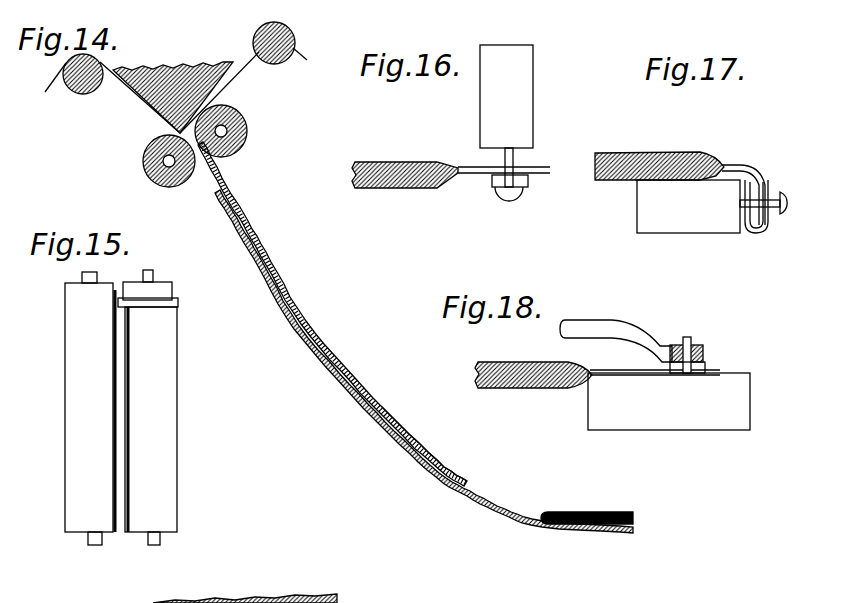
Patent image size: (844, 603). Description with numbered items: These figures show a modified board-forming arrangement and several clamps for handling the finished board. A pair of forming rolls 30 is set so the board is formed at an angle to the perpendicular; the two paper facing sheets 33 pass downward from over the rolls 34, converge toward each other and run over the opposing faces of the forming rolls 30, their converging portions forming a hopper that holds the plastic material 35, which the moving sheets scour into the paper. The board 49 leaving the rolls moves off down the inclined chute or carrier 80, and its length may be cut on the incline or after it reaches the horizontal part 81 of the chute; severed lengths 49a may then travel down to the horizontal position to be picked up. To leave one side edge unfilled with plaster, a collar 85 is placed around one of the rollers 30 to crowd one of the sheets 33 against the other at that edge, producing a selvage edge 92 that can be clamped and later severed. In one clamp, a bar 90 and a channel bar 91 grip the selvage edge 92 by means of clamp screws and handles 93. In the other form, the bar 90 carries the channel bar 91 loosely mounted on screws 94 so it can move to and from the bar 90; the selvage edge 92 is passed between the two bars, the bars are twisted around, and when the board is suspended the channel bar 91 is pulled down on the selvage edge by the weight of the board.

In FIG. 14, the forming rolls 30 is at (248, 143).
In FIG. 15, the forming rolls 30 is at (121, 407).
In FIG. 14, the paper facing sheets 33 is at (143, 103).
In FIG. 15, the paper facing sheets 33 is at (113, 468).
In FIG. 14, the rolls 34 is at (73, 94).
In FIG. 14, the plastic material 35 is at (178, 70).
In FIG. 15, the plastic material 35 is at (253, 598).
In FIG. 14, the board 49 is at (254, 226).
In FIG. 14, the severed lengths 49a is at (410, 449).
In FIG. 16, the severed lengths 49a is at (397, 158).
In FIG. 17, the severed lengths 49a is at (652, 150).
In FIG. 18, the severed lengths 49a is at (533, 364).
In FIG. 14, the inclined chute 80 is at (284, 320).
In FIG. 14, the horizontal part 81 is at (593, 534).
In FIG. 15, the collar 85 is at (178, 303).
In FIG. 16, the bar 90 is at (506, 96).
In FIG. 17, the bar 90 is at (688, 206).
In FIG. 18, the bar 90 is at (669, 401).
In FIG. 16, the channel bar 91 is at (530, 183).
In FIG. 17, the channel bar 91 is at (757, 228).
In FIG. 18, the channel bar 91 is at (704, 360).
In FIG. 16, the selvage edge 92 is at (480, 177).
In FIG. 17, the selvage edge 92 is at (757, 167).
In FIG. 18, the selvage edge 92 is at (615, 370).
In FIG. 18, the handles 93 is at (617, 330).
In FIG. 16, the screws 94 is at (513, 157).
In FIG. 17, the screws 94 is at (772, 222).
In FIG. 18, the screws 94 is at (687, 338).